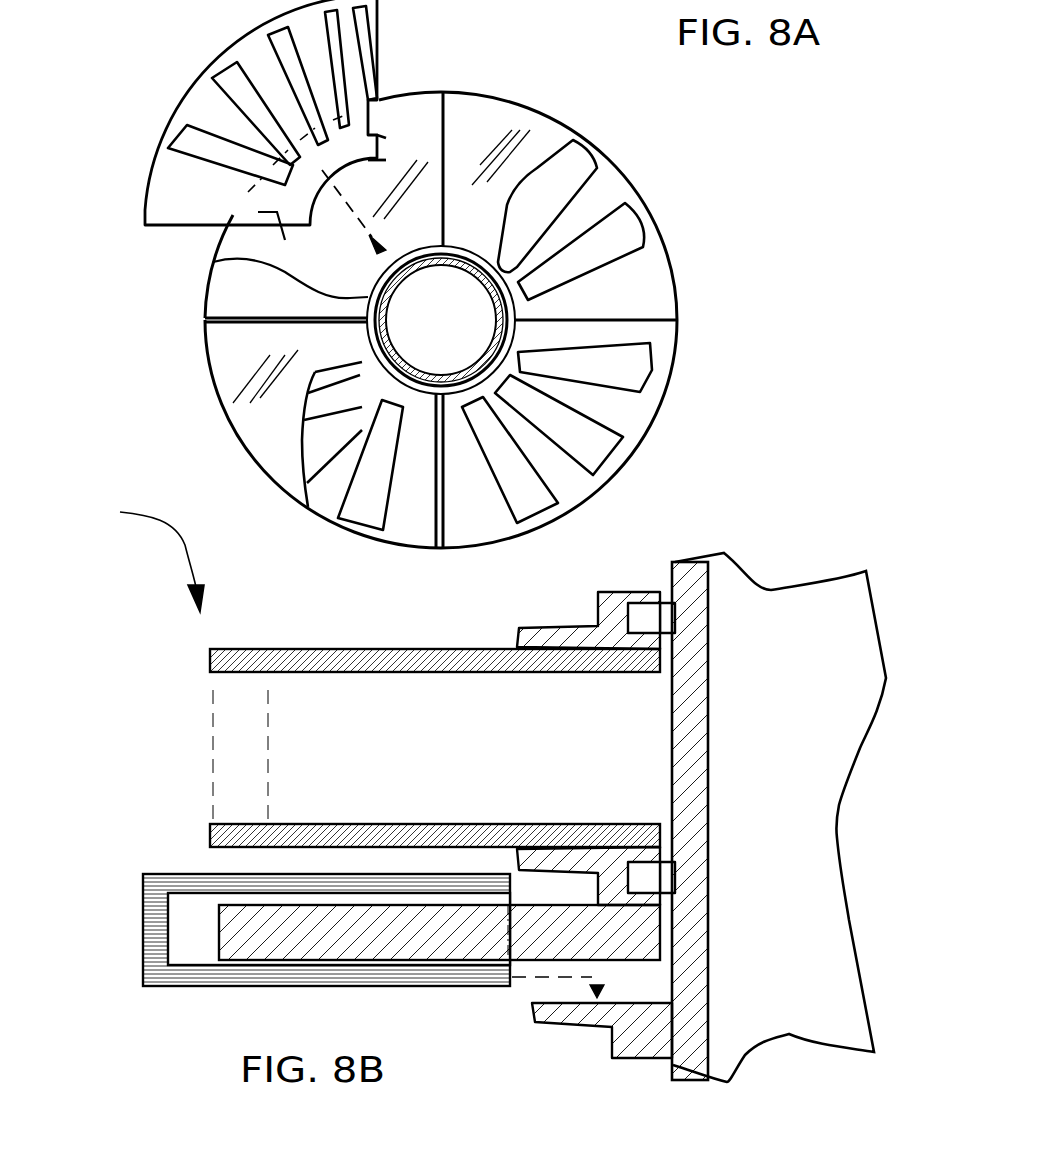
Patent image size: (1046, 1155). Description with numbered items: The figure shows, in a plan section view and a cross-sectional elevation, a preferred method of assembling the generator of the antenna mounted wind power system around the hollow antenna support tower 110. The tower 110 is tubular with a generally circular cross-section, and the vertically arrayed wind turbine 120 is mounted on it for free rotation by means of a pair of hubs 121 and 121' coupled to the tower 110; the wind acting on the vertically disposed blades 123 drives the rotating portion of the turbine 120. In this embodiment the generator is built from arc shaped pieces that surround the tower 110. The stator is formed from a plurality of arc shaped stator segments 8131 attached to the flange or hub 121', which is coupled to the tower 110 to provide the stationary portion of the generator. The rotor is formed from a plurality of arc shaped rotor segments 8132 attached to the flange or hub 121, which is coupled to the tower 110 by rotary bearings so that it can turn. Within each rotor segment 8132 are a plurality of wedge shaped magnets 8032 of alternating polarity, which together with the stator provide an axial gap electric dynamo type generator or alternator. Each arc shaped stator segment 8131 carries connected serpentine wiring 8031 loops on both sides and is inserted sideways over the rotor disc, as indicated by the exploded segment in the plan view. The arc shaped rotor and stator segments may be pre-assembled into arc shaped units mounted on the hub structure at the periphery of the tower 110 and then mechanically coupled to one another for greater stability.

In FIG. 8A, the antenna support tower 110 is at (472, 338).
In FIG. 8B, the antenna support tower 110 is at (812, 677).
In FIG. 8B, the vertically arrayed wind turbine 120 is at (124, 556).
In FIG. 8A, the hub 121 is at (362, 492).
In FIG. 8B, the hub 121 is at (632, 746).
In FIG. 8A, the hub 121' is at (248, 256).
In FIG. 8B, the hub 121' is at (552, 1055).
In FIG. 8B, the blades 123 is at (305, 817).
In FIG. 8A, the serpentine wiring 8031 is at (188, 100).
In FIG. 8A, the wedge shaped magnets 8032 is at (617, 245).
In FIG. 8A, the arc shaped stator segments 8131 is at (142, 168).
In FIG. 8B, the arc shaped stator segments 8131 is at (195, 993).
In FIG. 8A, the arc shaped rotor segments 8132 is at (670, 405).
In FIG. 8B, the arc shaped rotor segments 8132 is at (212, 925).